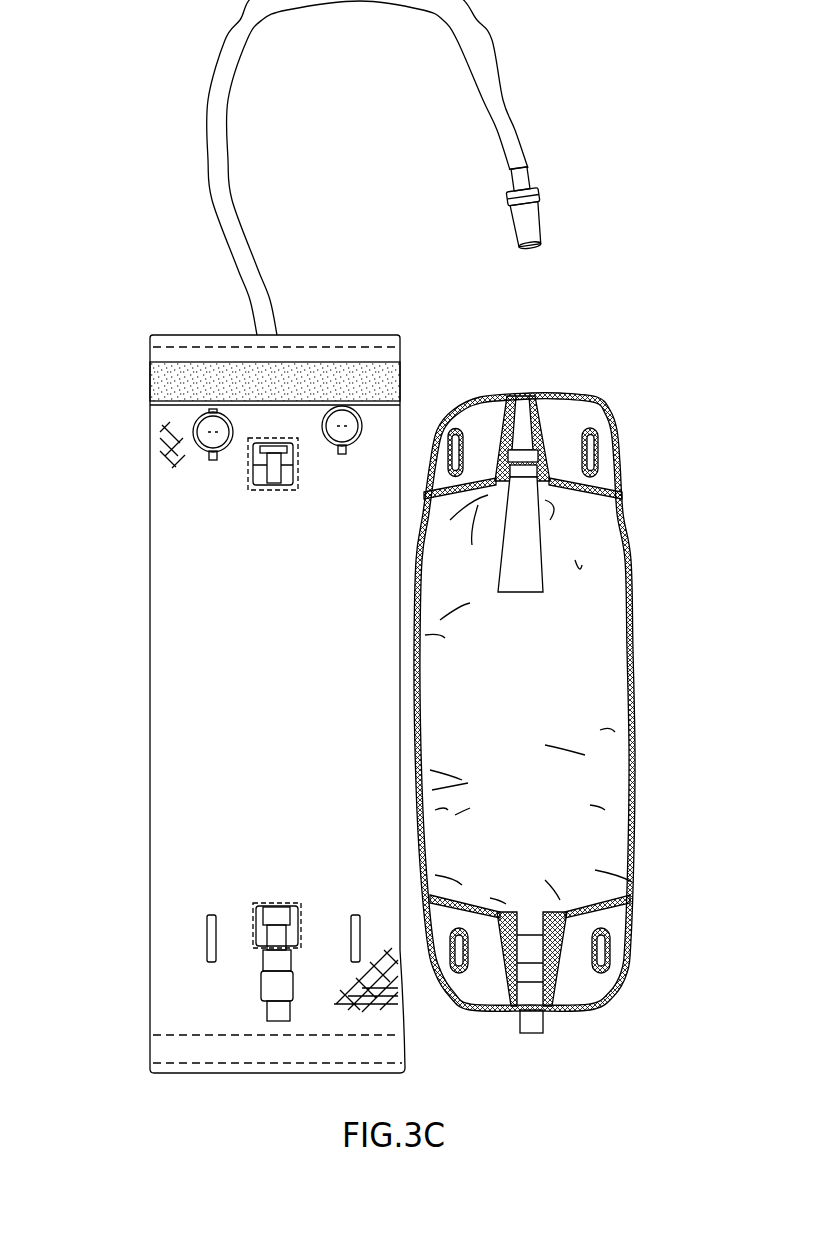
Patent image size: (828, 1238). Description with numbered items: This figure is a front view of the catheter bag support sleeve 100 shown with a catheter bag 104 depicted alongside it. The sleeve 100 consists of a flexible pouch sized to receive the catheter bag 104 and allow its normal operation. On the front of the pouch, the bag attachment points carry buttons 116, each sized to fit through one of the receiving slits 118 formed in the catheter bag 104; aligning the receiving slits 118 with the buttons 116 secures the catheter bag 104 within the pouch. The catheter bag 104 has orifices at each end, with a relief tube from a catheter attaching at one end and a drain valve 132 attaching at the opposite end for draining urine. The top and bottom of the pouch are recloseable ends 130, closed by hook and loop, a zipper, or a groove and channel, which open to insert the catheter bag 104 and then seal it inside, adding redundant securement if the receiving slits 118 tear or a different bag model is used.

The catheter bag support sleeve 100 is at (147, 256).
The catheter bag 104 is at (605, 692).
The buttons 116 is at (214, 462).
The receiving slits 118 is at (447, 437).
The recloseable ends 130 is at (222, 334).
The drain valve 132 is at (268, 1014).